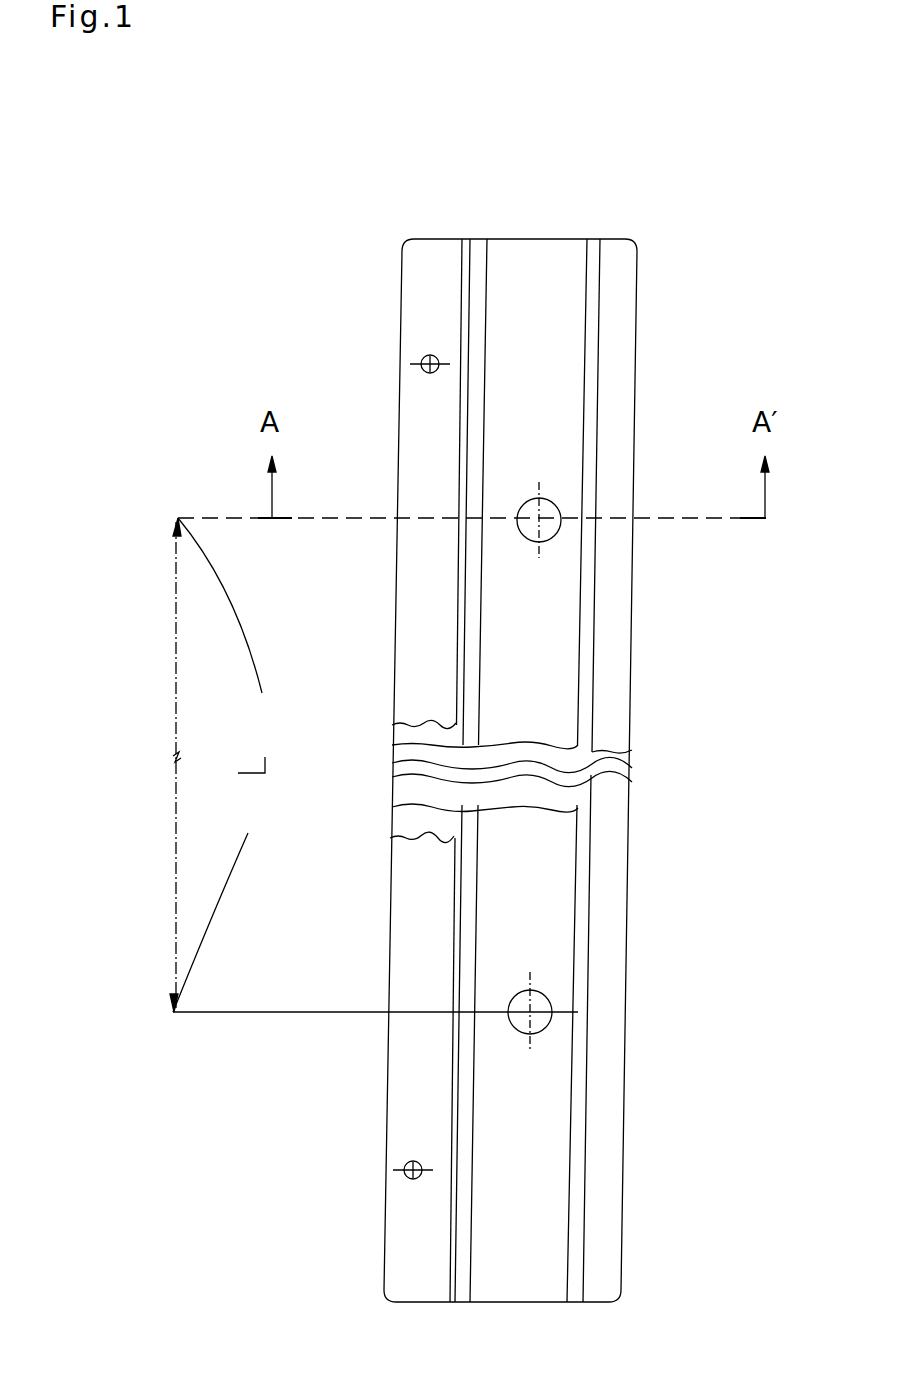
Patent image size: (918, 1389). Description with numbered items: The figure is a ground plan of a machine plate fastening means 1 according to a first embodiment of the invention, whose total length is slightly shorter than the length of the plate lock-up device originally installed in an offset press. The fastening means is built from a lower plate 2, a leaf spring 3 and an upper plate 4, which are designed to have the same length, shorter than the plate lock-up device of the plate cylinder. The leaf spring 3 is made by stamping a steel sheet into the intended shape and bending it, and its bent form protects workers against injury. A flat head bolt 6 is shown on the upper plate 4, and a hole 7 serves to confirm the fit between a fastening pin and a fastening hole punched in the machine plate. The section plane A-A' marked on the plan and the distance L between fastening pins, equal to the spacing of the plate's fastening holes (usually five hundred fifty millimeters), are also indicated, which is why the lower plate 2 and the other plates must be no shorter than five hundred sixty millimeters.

The machine plate fastening means 1 is at (521, 192).
The lower plate 2 is at (616, 619).
The leaf spring 3 is at (556, 695).
The upper plate 4 is at (420, 618).
The flat head bolt 6 is at (422, 362).
The hole 7 is at (550, 508).